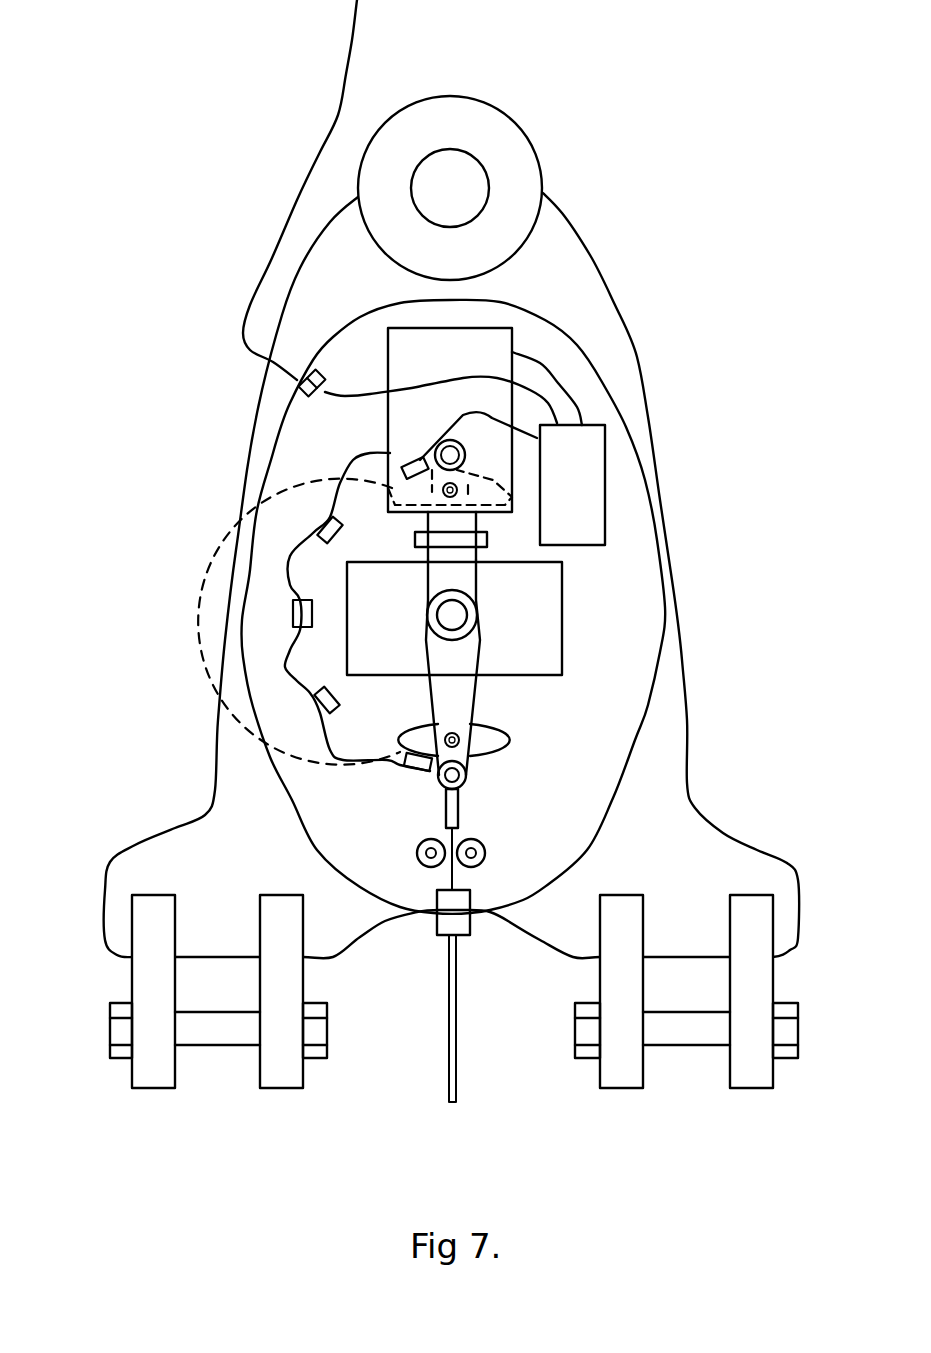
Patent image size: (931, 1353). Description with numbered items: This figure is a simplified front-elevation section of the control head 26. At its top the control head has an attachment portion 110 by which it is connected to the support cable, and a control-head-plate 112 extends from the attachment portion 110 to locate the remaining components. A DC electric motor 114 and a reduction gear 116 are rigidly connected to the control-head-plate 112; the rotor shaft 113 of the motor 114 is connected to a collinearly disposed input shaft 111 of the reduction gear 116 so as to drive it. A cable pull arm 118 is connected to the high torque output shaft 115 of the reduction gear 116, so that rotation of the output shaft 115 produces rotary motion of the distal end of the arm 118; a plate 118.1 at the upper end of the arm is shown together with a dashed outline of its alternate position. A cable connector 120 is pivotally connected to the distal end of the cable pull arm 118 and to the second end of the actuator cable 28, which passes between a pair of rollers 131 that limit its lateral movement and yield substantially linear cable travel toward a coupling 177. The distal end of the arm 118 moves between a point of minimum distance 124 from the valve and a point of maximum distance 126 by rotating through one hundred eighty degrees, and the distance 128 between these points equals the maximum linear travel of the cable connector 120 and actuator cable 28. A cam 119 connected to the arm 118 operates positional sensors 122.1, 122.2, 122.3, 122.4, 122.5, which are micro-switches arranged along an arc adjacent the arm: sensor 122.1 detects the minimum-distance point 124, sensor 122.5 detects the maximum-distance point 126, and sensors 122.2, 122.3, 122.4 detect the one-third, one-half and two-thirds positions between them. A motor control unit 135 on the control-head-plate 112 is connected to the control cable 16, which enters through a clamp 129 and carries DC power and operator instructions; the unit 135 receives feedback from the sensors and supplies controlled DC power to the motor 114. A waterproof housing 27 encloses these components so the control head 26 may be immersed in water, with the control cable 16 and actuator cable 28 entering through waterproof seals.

The control cable 16 is at (338, 98).
The control head 26 is at (681, 253).
The waterproof housing 27 is at (622, 407).
The actuator cable 28 is at (470, 1020).
The attachment portion 110 is at (510, 141).
The input shaft 111 is at (490, 547).
The control-head-plate 112 is at (643, 347).
The rotor shaft 113 is at (492, 521).
The DC electric motor 114 is at (477, 342).
The high torque output shaft 115 is at (455, 614).
The reduction gear 116 is at (530, 591).
The cable pull arm 118 is at (478, 682).
The lever plate 118.1 is at (462, 445).
The cam 119 is at (488, 737).
The cable connector 120 is at (443, 819).
The positional sensor 122.1 is at (410, 763).
The positional sensor 122.2 is at (305, 700).
The positional sensor 122.3 is at (290, 614).
The positional sensor 122.4 is at (312, 524).
The positional sensor 122.5 is at (390, 470).
The point of minimum distance 124 is at (470, 775).
The point of maximum distance 126 is at (450, 452).
The distance 128 is at (732, 454).
The cable clamp 129 is at (292, 386).
The rollers 131 is at (492, 847).
The motor control unit 135 is at (588, 438).
The rod coupling 177 is at (475, 937).